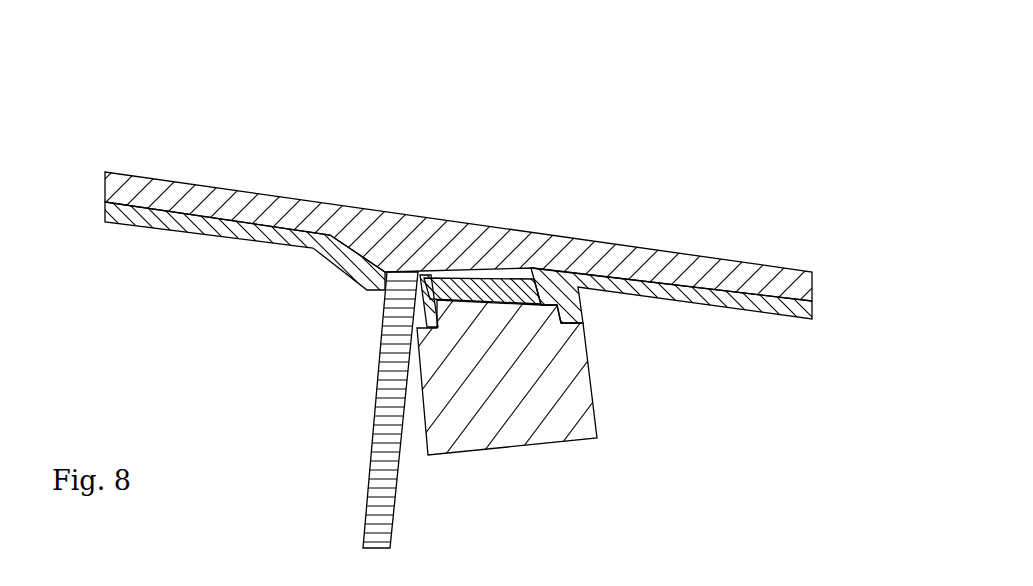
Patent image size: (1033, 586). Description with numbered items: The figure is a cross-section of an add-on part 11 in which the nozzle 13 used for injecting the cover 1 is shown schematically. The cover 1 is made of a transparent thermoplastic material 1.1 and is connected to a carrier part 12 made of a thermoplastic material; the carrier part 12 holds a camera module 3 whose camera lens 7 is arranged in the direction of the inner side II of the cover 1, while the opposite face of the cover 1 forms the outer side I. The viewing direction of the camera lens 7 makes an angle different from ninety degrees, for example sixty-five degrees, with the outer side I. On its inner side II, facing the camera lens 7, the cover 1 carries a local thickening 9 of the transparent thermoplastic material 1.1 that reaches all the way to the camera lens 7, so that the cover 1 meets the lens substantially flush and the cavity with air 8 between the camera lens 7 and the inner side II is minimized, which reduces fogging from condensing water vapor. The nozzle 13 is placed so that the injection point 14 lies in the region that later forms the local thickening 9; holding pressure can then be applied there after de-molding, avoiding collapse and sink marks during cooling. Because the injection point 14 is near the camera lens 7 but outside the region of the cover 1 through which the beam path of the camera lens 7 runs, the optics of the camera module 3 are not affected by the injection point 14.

The cover 1 is at (782, 265).
The transparent thermoplastic material 1.1 is at (186, 194).
The carrier part 12 is at (105, 208).
The add-on part 11 is at (125, 133).
The outer side I is at (227, 190).
The inner side II is at (458, 282).
The nozzle 13 is at (370, 449).
The camera module 3 is at (577, 403).
The local thickening 9 is at (463, 262).
The cavity with air 8 is at (488, 283).
The camera lens 7 is at (522, 289).
The injection point 14 is at (405, 268).